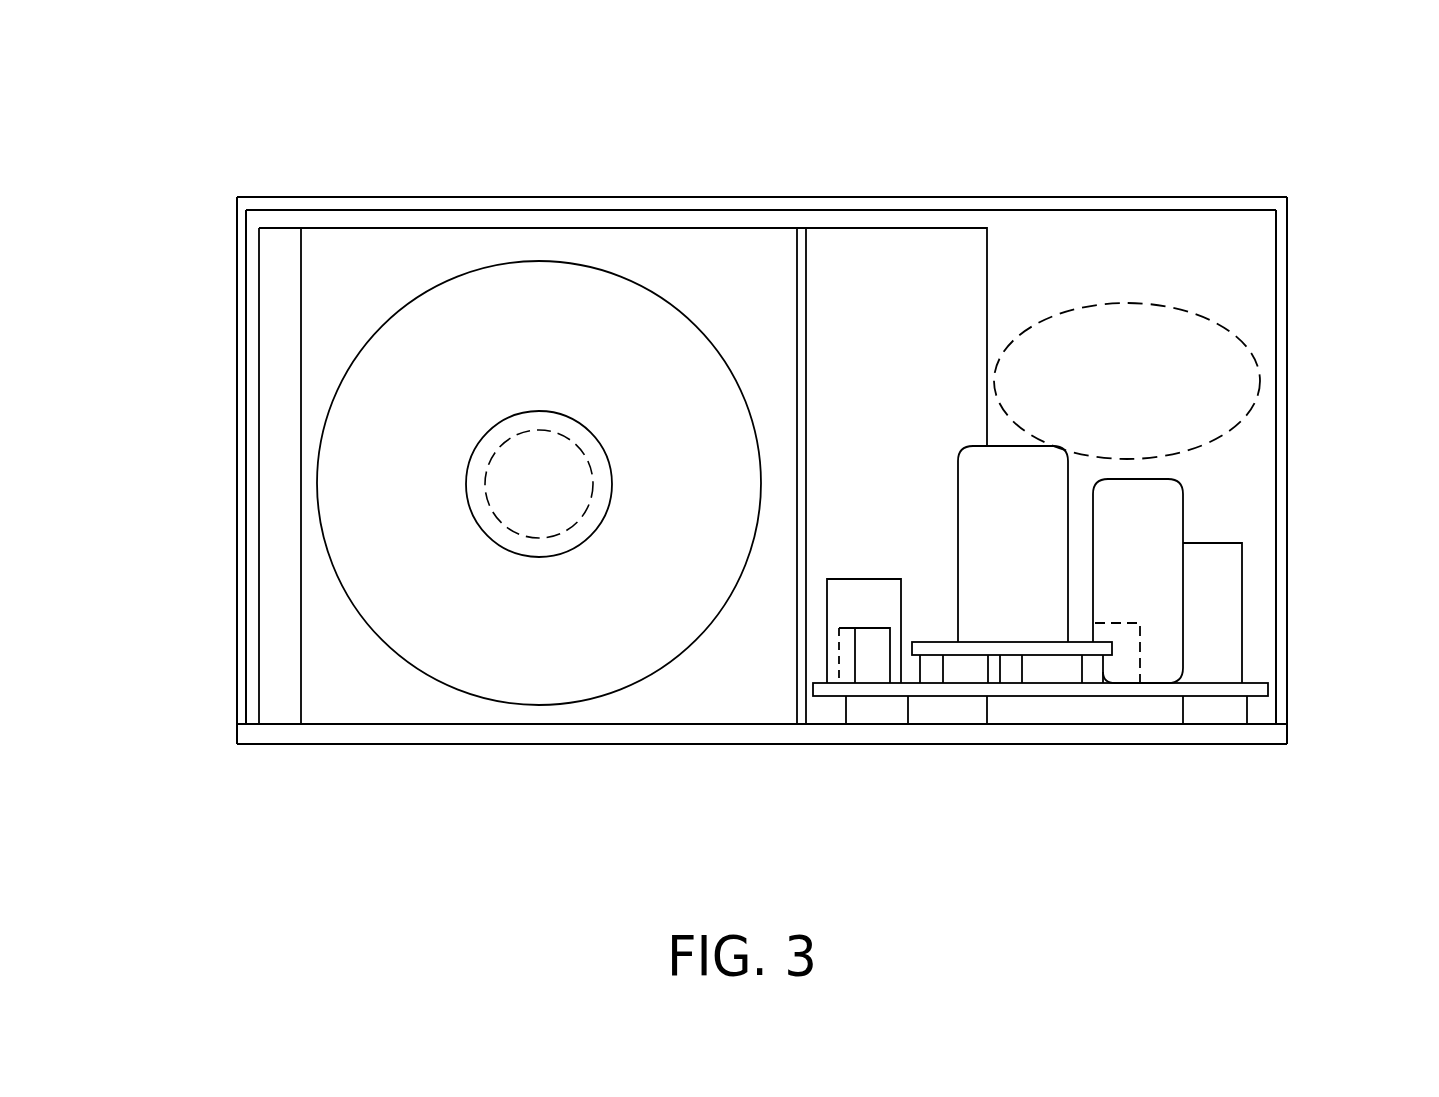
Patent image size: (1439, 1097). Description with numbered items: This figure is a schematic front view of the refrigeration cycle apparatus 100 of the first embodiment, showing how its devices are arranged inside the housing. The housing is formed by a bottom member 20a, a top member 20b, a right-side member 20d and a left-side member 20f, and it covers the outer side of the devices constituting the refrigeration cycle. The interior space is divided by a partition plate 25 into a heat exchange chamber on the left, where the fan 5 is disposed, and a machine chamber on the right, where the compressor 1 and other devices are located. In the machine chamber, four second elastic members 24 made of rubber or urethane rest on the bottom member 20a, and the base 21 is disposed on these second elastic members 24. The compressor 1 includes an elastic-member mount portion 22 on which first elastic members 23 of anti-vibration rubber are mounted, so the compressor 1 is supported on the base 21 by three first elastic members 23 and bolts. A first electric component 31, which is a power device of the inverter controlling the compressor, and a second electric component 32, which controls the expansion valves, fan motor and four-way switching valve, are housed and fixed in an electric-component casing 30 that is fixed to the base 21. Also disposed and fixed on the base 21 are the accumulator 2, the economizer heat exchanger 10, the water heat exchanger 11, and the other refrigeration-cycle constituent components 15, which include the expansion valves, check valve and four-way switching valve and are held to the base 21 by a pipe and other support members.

The electronic device 100 is at (768, 450).
The bottom member 20a is at (803, 745).
The top member 20b is at (853, 197).
The right-side member 20d is at (1287, 418).
The left-side member 20f is at (237, 470).
The partition plate 25 is at (796, 280).
The fan 5 is at (428, 631).
The electric-component casing 30 is at (825, 599).
The first electric component 31 is at (856, 663).
The second electric component 32 is at (840, 648).
The base 21 is at (1263, 690).
The second elastic members 24 is at (873, 710).
The compressor 1 is at (1017, 465).
The elastic-member mount portion 22 is at (1112, 648).
The first elastic members 23 is at (932, 670).
The accumulator 2 is at (1183, 510).
The economizer heat exchanger 10 is at (1140, 650).
The water heat exchanger 11 is at (1230, 613).
The other refrigeration-cycle constituent components 15 is at (1198, 313).